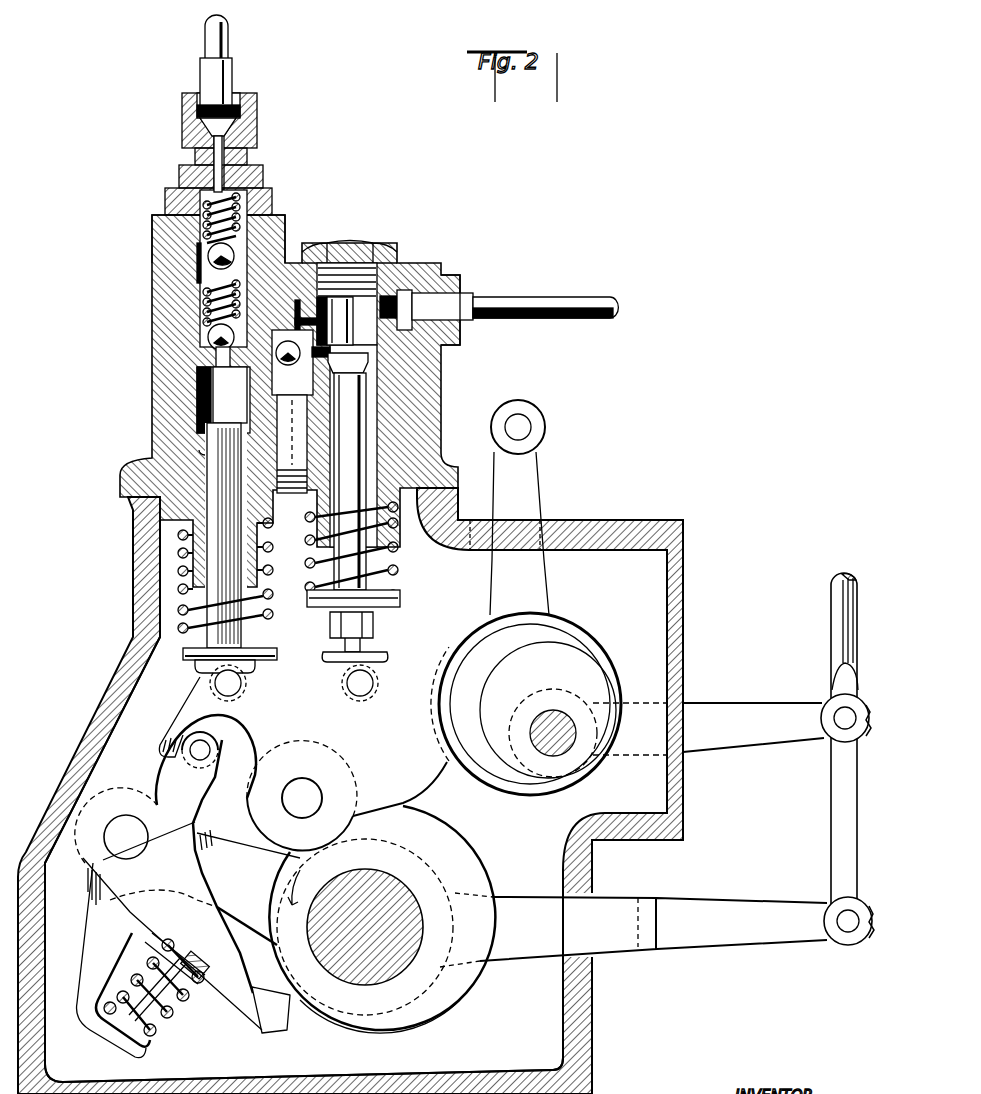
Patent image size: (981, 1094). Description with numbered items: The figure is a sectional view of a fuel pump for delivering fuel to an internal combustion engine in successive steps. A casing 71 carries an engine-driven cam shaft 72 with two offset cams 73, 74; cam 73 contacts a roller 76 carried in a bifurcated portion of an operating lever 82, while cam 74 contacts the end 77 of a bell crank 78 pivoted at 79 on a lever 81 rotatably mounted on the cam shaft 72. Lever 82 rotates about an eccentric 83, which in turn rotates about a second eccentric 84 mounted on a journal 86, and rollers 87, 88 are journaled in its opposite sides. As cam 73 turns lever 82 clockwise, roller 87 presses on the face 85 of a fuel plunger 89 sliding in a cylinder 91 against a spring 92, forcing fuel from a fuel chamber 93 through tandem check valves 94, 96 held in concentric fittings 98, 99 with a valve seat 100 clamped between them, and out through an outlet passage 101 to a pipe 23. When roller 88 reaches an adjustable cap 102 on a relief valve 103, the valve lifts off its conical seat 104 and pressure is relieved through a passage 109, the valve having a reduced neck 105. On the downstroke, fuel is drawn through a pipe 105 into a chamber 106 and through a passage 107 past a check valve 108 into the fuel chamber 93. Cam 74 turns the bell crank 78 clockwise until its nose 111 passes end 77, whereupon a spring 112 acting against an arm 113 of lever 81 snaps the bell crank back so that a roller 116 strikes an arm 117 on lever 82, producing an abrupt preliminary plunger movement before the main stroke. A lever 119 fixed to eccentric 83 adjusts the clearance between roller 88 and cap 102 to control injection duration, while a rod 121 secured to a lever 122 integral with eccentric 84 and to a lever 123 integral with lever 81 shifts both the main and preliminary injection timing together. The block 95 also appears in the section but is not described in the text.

The pipe 23 is at (228, 36).
The casing 71 is at (624, 520).
The cam shaft 72 is at (420, 930).
The cam 73 is at (462, 858).
The cam 74 is at (322, 1020).
The roller 76 is at (262, 805).
The end of bell crank 77 is at (266, 1022).
The bell crank 78 is at (97, 860).
The pivot 79 is at (138, 850).
The lever 81 is at (260, 881).
The operating lever 82 is at (312, 723).
The eccentric 83 is at (490, 671).
The second eccentric 84 is at (549, 674).
The face of fuel plunger 85 is at (208, 668).
The journal 86 is at (542, 727).
The roller 87 is at (243, 677).
The roller 88 is at (375, 676).
The fuel plunger 89 is at (210, 628).
The cylinder 91 is at (200, 449).
The spring 92 is at (183, 589).
The fuel chamber 93 is at (213, 397).
The check valve 94 is at (208, 338).
The valve body 95 is at (286, 233).
The check valve 96 is at (208, 254).
The fitting 98 is at (264, 172).
The fitting 99 is at (273, 200).
The valve seat 100 is at (203, 280).
The outlet passage 101 is at (242, 158).
The adjustable cap 102 is at (372, 652).
The relief valve 103 is at (378, 592).
The conical seat 104 is at (415, 366).
The reduced neck / pipe 105 is at (527, 305).
The chamber 106 is at (354, 321).
The passage 107 is at (300, 310).
The check valve 108 is at (301, 352).
The passage 109 is at (281, 411).
The nose of cam 111 is at (282, 995).
The spring 112 is at (162, 1018).
The arm 113 is at (88, 950).
The roller 116 is at (220, 751).
The arm 117 is at (180, 722).
The lever 119 is at (532, 478).
The rod 121 is at (838, 590).
The lever 122 is at (708, 729).
The lever 123 is at (633, 930).